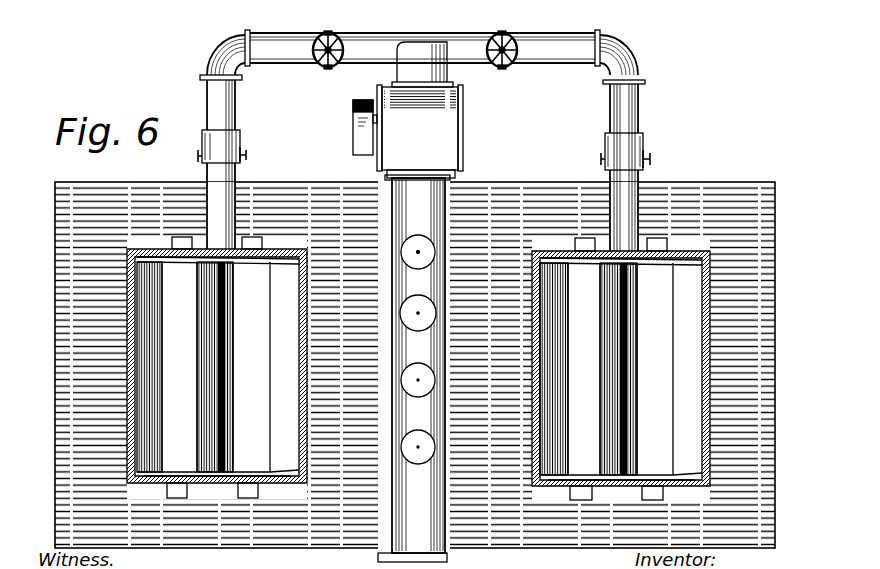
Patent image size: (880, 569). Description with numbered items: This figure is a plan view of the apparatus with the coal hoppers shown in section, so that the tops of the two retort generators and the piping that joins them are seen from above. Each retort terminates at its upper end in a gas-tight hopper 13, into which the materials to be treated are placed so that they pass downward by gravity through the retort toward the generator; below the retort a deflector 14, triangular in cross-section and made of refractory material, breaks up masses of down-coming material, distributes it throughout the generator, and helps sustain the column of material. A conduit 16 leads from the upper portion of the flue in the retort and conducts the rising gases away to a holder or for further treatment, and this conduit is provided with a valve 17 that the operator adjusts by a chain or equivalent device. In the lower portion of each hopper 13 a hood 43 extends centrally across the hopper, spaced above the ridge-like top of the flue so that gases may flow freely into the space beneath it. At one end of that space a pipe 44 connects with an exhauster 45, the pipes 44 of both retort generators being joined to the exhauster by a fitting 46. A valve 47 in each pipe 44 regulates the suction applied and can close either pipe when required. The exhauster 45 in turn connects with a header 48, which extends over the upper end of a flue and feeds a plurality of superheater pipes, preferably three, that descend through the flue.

The gas-tight hopper 13 is at (142, 348).
The deflector 14 is at (607, 369).
The conduit 16 is at (245, 140).
The valve 17 is at (247, 157).
The hood 43 is at (232, 366).
The pipe 44 is at (210, 102).
The exhauster 45 is at (452, 122).
The fitting 46 is at (404, 72).
The valve 47 is at (338, 37).
The header 48 is at (428, 217).